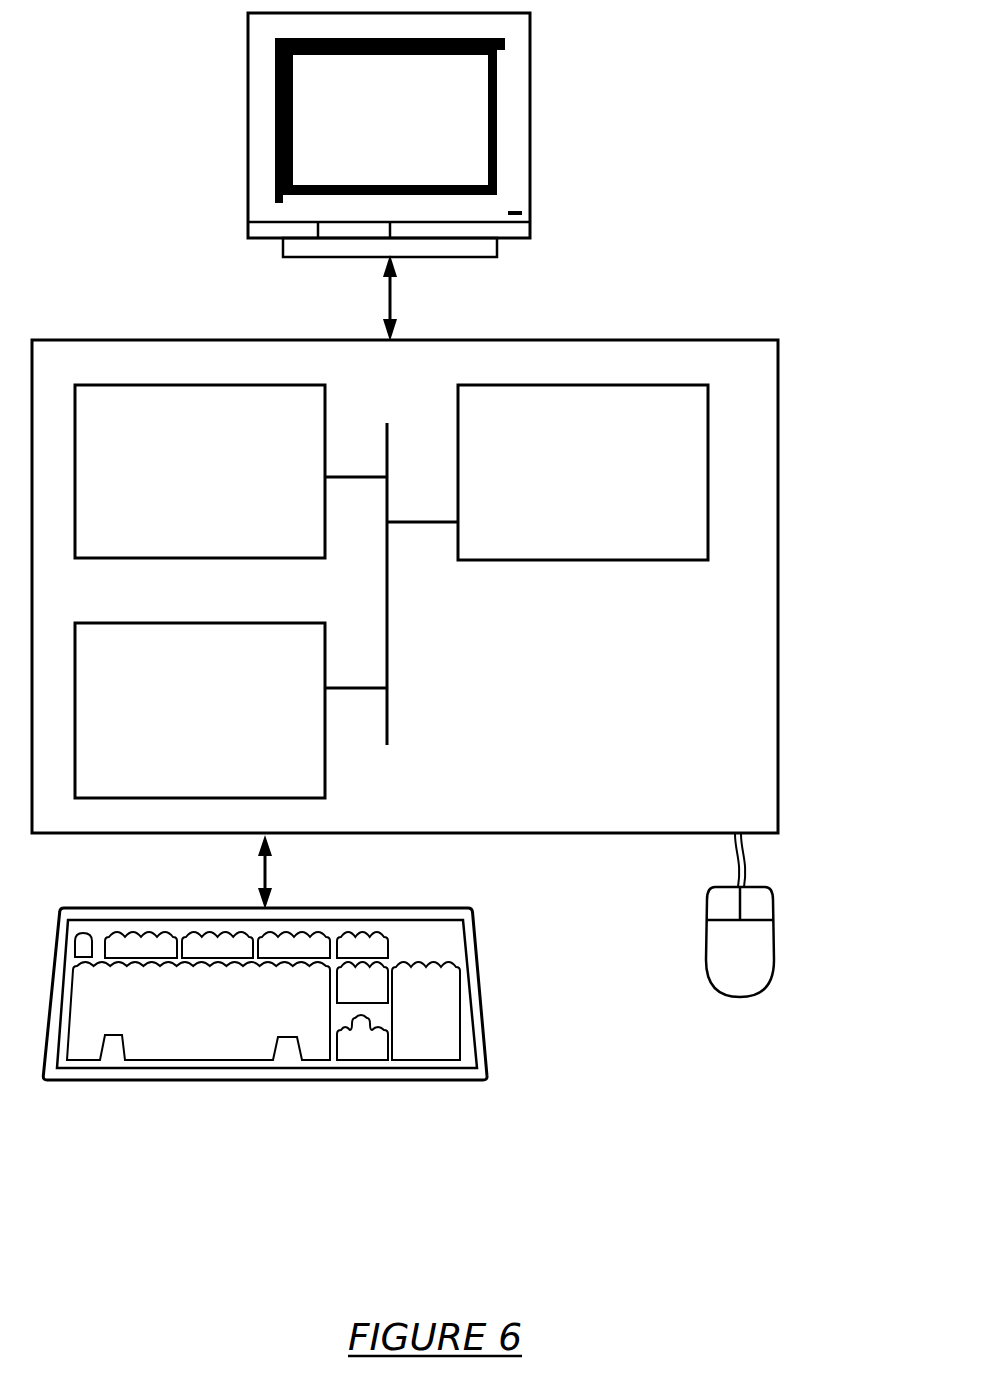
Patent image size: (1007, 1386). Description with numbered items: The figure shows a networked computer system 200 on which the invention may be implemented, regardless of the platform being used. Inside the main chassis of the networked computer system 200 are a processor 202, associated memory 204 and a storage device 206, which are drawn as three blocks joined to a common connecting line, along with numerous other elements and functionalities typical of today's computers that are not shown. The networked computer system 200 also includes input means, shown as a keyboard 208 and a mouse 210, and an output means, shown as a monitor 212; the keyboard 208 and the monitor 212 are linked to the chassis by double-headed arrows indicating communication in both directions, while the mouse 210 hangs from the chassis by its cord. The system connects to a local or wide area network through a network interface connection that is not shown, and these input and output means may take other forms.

The networked computer system 200 is at (804, 180).
The processor 202 is at (555, 485).
The memory 204 is at (177, 485).
The storage device 206 is at (174, 727).
The keyboard 208 is at (180, 1025).
The mouse 210 is at (717, 967).
The monitor 212 is at (367, 138).